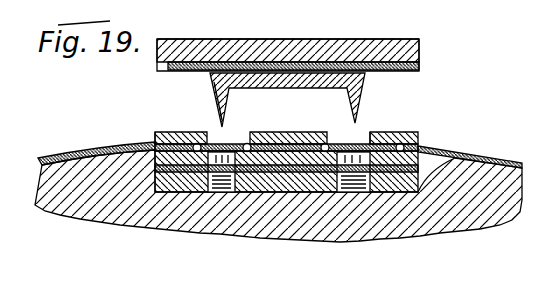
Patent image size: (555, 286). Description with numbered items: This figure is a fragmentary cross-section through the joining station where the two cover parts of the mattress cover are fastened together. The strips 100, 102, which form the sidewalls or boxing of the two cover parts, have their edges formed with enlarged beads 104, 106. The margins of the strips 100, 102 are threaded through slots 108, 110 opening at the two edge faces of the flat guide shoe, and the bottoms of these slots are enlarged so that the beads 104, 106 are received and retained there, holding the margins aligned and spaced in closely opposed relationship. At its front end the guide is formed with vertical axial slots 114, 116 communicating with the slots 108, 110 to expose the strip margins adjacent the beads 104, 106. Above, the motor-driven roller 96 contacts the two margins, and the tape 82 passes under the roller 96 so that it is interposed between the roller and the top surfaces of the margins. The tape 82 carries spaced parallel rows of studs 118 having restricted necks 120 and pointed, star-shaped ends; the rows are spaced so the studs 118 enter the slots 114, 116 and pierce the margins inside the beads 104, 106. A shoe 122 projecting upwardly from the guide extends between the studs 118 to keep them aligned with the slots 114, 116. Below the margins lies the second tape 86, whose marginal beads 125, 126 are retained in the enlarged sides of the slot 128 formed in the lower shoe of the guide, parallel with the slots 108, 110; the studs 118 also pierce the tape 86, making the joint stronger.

The tape 82 is at (178, 68).
The tape 86 is at (252, 192).
The roller 96 is at (327, 43).
The strip 100 is at (477, 150).
The strip 102 is at (83, 152).
The enlarged bead 104 is at (330, 132).
The enlarged bead 106 is at (228, 106).
The slot 108 is at (398, 132).
The slot 110 is at (185, 132).
The vertical axial slot 114 is at (368, 132).
The vertical axial slot 116 is at (204, 132).
The stud 118 is at (343, 96).
The restricted neck 120 is at (247, 40).
The shoe 122 is at (295, 40).
The marginal bead 125 is at (402, 185).
The marginal bead 126 is at (181, 160).
The slot 128 is at (291, 192).